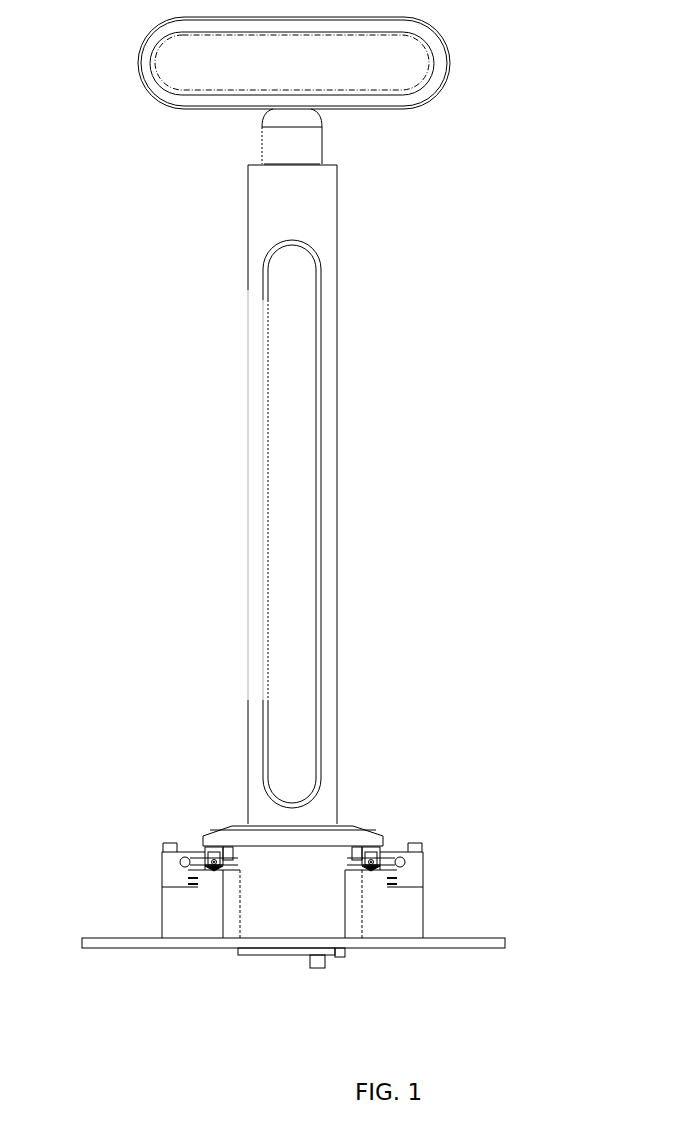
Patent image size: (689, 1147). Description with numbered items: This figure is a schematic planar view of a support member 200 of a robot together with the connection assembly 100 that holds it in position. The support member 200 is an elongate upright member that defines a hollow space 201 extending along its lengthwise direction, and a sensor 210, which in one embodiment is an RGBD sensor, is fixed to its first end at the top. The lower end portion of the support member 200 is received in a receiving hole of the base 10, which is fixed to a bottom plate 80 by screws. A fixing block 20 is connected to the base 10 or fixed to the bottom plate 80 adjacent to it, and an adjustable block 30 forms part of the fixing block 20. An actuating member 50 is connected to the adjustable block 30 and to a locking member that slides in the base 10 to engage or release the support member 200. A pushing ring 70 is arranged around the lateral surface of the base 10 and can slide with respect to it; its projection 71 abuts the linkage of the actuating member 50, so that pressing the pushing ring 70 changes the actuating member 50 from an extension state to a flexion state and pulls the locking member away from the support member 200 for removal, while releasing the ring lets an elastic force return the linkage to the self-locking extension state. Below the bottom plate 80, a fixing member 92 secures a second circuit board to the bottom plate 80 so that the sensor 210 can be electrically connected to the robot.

The sensor 210 is at (358, 65).
The support member 200 is at (340, 382).
The hollow space 201 is at (292, 422).
The pushing ring 70 is at (345, 838).
The projection 71 is at (213, 852).
The actuating member 50 is at (190, 848).
The adjustable block 30 is at (168, 866).
The fixing block 20 is at (181, 912).
The base 10 is at (279, 900).
The fixing member 92 is at (330, 958).
The bottom plate 80 is at (120, 938).
The connection assembly 100 is at (432, 906).